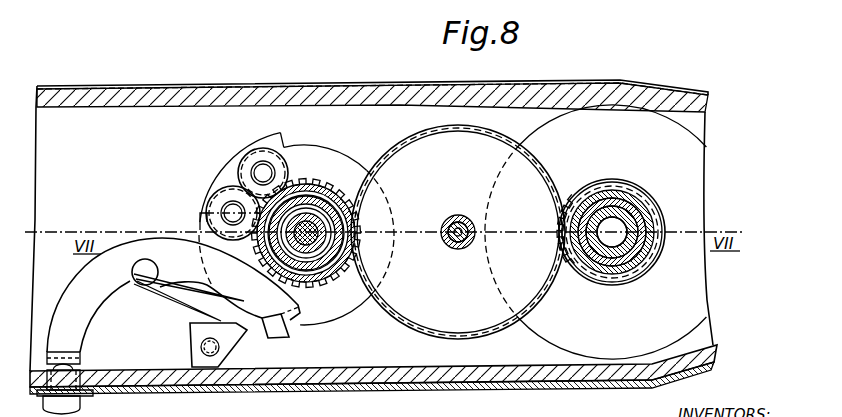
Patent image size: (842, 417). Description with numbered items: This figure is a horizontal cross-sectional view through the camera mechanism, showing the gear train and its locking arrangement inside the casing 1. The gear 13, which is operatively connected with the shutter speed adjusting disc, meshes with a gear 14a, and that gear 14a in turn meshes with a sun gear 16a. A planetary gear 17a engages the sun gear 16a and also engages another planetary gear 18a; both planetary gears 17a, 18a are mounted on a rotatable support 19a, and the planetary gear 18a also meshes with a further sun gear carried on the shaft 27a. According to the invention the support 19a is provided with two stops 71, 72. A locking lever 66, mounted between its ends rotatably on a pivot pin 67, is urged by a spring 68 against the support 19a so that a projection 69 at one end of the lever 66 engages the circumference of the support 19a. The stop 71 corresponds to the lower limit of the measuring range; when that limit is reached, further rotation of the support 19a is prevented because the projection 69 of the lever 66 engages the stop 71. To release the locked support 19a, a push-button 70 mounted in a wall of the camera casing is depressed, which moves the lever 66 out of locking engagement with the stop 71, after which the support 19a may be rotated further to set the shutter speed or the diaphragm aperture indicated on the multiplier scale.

The housing 1 is at (686, 97).
The gear 13 is at (612, 281).
The gear 14a is at (414, 312).
The sun gear 16a is at (332, 274).
The planetary gear 17a is at (224, 204).
The planetary gear 18a is at (250, 163).
The support 19a is at (335, 153).
The shaft 27a is at (318, 222).
The locking lever 66 is at (74, 318).
The pivot pin 67 is at (141, 283).
The spring 68 is at (201, 284).
The projection 69 is at (284, 325).
The push-button 70 is at (77, 401).
The stop 71 is at (258, 320).
The stop 72 is at (284, 138).